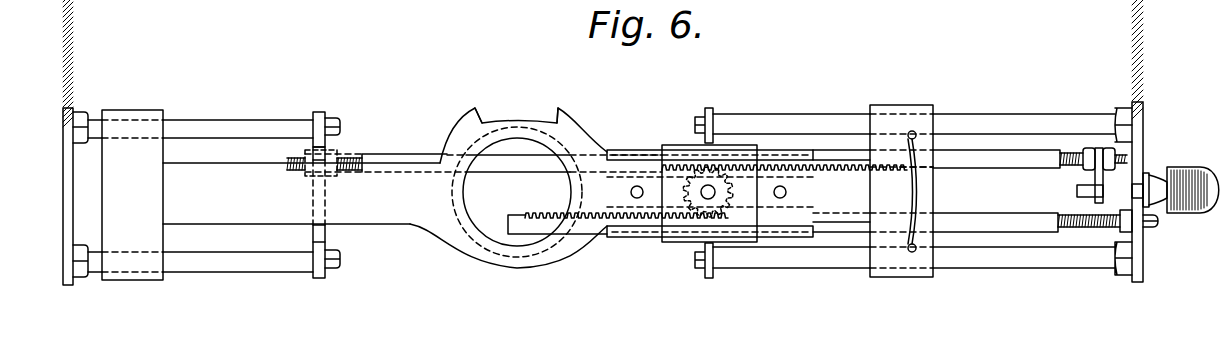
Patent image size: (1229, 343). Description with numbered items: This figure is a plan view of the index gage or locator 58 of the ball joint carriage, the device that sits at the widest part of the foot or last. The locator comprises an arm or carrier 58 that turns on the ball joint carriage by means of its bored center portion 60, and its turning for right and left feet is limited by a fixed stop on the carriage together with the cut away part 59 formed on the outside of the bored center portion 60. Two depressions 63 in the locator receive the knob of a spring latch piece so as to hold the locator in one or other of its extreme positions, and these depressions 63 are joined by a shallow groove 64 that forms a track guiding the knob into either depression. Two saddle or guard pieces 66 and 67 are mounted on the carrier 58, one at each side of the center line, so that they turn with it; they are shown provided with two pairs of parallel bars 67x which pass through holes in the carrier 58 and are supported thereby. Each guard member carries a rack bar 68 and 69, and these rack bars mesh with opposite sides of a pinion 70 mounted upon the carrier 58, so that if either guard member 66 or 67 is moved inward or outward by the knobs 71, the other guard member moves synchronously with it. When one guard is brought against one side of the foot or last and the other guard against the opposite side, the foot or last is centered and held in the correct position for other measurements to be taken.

The index gage or locator 58 is at (852, 193).
The cut away part 59 is at (482, 117).
The bored center portion 60 is at (463, 195).
The depressions 63 is at (916, 133).
The shallow groove 64 is at (920, 192).
The saddle or guard piece 66 is at (73, 168).
The saddle or guard piece 67 is at (1132, 146).
The parallel bars 67x is at (245, 122).
The rack bar 68 is at (671, 146).
The rack bar 69 is at (625, 220).
The pinion 70 is at (728, 193).
The knobs 71 is at (1188, 167).